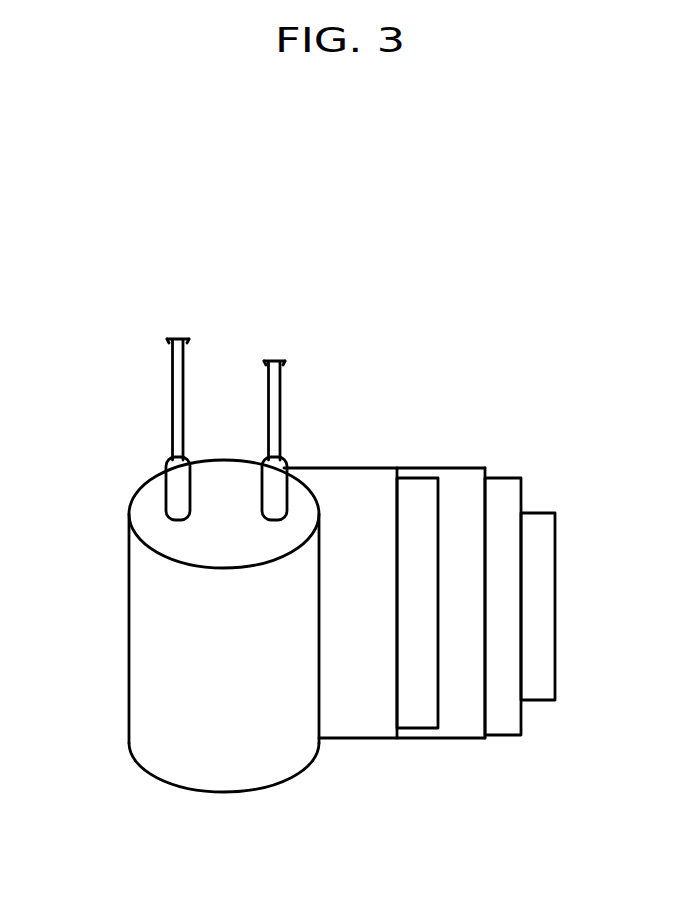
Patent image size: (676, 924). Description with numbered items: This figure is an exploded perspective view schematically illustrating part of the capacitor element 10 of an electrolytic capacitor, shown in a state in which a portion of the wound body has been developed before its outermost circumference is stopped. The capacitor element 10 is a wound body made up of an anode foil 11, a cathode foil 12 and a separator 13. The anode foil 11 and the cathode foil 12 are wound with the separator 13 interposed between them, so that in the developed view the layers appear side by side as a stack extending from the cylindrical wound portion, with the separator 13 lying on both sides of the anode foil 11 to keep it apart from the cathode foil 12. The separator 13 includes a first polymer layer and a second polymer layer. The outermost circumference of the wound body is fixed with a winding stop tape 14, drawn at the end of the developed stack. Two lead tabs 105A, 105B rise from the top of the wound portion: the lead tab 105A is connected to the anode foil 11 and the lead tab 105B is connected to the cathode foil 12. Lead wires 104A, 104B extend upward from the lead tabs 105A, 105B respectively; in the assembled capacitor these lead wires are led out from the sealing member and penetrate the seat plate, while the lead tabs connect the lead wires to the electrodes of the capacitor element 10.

The capacitor element 10 is at (308, 539).
The anode foil 11 is at (417, 717).
The cathode foil 12 is at (502, 725).
The separator 13 is at (358, 722).
The winding stop tape 14 is at (533, 690).
The lead wire 104A is at (178, 374).
The lead wire 104B is at (276, 372).
The lead tab 105A is at (180, 473).
The lead tab 105B is at (273, 470).